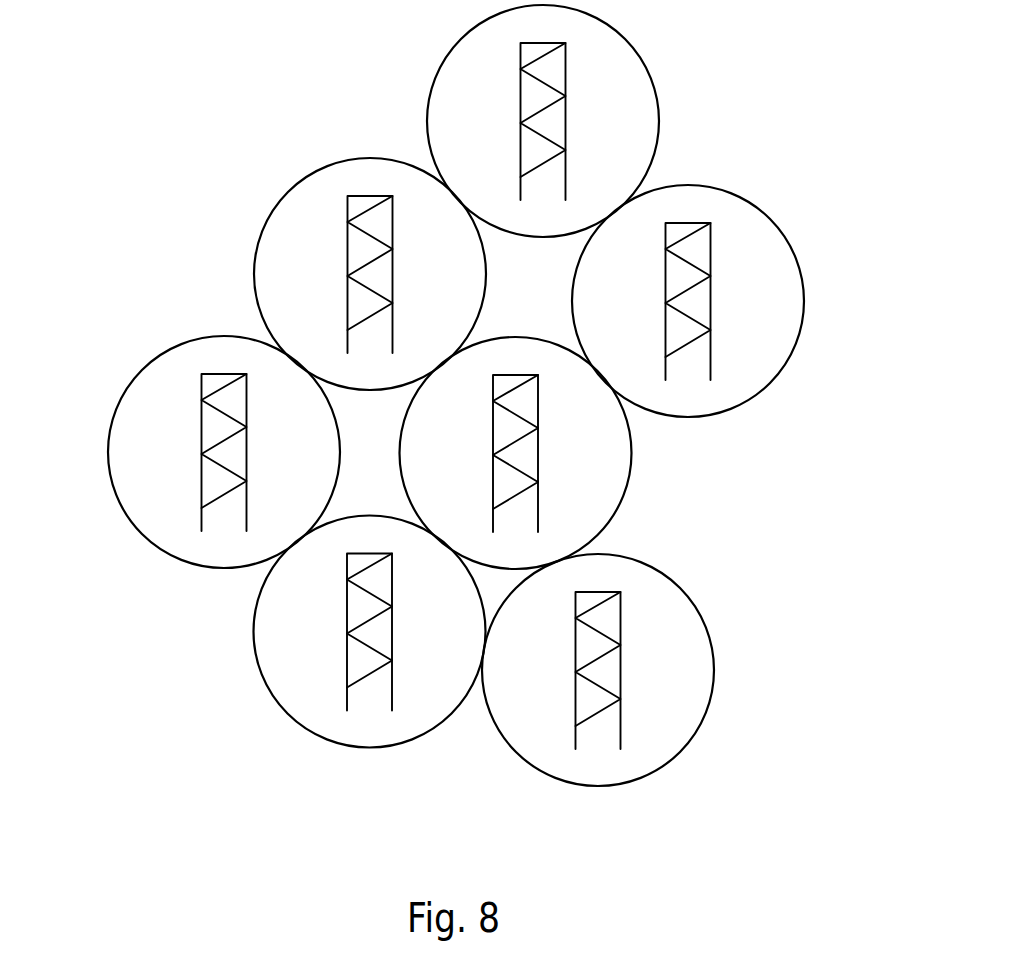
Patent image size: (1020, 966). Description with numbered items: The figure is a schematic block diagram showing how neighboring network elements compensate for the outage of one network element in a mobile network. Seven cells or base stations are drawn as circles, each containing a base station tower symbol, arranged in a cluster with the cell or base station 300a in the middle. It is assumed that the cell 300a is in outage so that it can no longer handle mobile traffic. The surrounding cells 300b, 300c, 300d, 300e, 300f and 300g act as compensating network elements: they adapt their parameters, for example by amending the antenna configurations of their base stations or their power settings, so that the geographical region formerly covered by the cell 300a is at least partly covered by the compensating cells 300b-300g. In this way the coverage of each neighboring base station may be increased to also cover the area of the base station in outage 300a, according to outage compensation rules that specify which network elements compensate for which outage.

The cell or base station in outage 300a is at (631, 459).
The compensating network element 300b is at (803, 287).
The compensating network element 300c is at (658, 103).
The compensating network element 300d is at (362, 158).
The compensating network element 300e is at (108, 453).
The compensating network element 300f is at (254, 643).
The compensating network element 300g is at (714, 672).